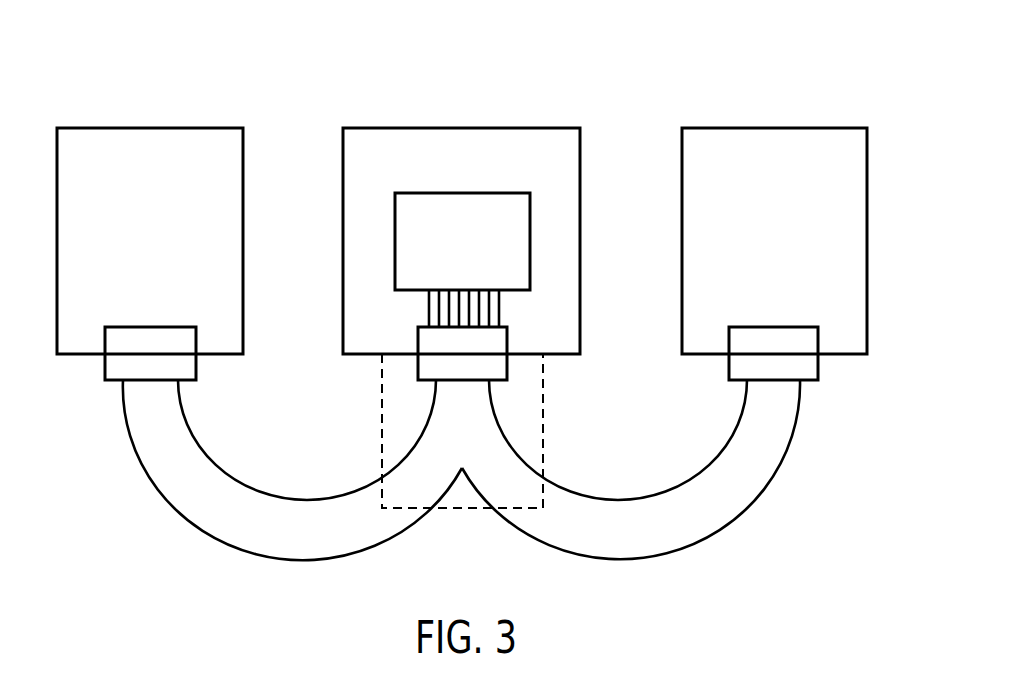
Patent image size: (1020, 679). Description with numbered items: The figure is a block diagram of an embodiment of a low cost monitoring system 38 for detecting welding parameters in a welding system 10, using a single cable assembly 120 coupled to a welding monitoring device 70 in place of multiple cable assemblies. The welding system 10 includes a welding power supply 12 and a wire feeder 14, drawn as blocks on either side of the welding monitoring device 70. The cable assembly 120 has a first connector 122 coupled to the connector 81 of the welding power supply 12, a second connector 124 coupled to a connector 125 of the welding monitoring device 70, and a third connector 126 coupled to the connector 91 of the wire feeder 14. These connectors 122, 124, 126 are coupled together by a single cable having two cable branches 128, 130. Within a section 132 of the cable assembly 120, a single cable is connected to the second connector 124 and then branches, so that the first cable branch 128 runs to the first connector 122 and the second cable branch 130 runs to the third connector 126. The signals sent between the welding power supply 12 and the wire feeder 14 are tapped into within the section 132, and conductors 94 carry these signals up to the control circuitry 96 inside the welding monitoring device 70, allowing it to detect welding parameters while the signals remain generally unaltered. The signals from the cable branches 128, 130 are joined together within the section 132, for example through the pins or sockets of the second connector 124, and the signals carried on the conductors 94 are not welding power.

The welding system 10 is at (172, 48).
The welding power supply 12 is at (150, 128).
The wire feeder 14 is at (775, 128).
The low cost monitoring system 38 is at (451, 61).
The welding monitoring device 70 is at (462, 128).
The connector of the welding power supply 81 is at (150, 327).
The connector of the wire feeder 91 is at (775, 327).
The conductors 94 is at (442, 303).
The control circuitry 96 is at (530, 243).
The cable assembly 120 is at (505, 575).
The first connector 122 is at (196, 367).
The second connector 124 is at (507, 373).
The connector of the welding monitoring device 125 is at (507, 340).
The third connector 126 is at (818, 367).
The first cable branch 128 is at (294, 545).
The second cable branch 130 is at (667, 537).
The section of the cable assembly 132 is at (543, 429).